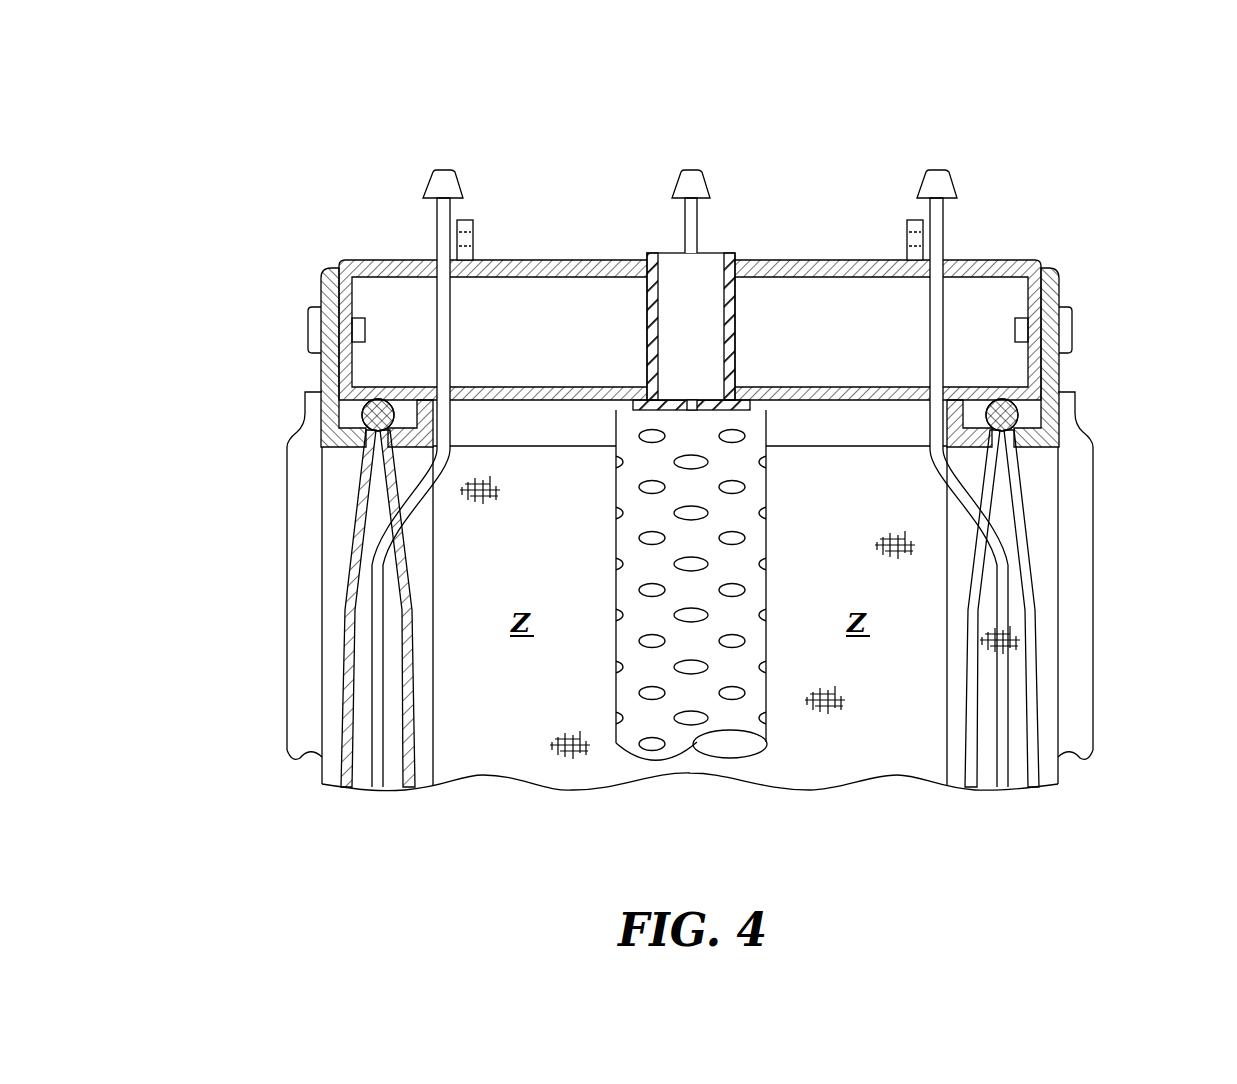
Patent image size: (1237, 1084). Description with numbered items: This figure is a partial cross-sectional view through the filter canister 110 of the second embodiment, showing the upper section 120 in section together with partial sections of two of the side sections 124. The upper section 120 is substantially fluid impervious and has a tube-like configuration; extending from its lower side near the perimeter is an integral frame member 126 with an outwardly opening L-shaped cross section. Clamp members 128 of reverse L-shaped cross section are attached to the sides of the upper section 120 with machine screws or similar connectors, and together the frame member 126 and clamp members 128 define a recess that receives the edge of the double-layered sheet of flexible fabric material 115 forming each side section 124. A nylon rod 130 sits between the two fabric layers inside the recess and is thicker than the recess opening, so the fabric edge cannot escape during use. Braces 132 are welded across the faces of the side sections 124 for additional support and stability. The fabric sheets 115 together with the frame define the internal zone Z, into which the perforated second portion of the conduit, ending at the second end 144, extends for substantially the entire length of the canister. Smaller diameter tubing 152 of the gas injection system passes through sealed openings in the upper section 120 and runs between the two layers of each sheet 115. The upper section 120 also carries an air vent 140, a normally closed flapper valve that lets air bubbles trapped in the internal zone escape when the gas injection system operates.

The filter canister 110 is at (1122, 124).
The double-layered sheet of flexible fabric material 115 is at (338, 521).
The upper section 120 is at (838, 160).
The side sections 124 is at (245, 626).
The frame member 126 is at (418, 418).
The clamp members 128 is at (304, 290).
The nylon rod 130 is at (372, 413).
The braces 132 is at (297, 713).
The air vent 140 is at (736, 316).
The second end 144 is at (627, 742).
The tubing 152 is at (443, 240).